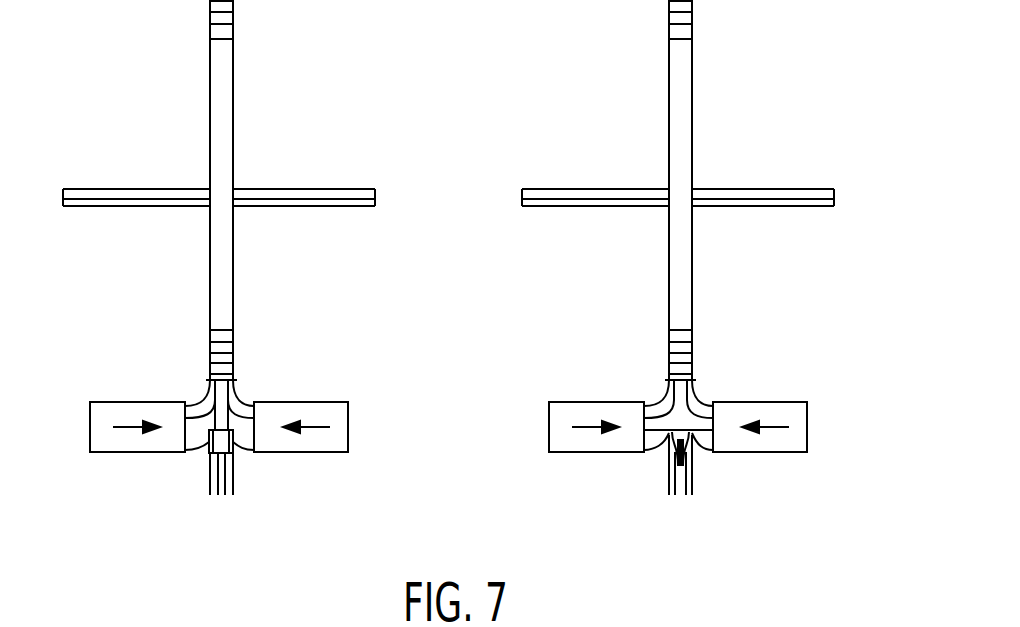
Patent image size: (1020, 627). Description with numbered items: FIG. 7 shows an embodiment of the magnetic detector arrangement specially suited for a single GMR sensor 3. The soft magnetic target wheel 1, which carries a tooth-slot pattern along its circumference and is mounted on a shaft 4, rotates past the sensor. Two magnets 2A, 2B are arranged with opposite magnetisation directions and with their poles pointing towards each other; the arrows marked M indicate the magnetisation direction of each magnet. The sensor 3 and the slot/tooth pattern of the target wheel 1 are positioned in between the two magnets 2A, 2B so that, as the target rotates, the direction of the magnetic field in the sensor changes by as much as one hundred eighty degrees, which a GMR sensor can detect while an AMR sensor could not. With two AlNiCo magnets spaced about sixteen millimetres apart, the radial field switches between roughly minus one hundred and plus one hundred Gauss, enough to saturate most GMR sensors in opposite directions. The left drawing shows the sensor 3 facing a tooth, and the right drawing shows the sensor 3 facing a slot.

The target wheel 1 is at (233, 77).
The first magnet 2A is at (107, 412).
The second magnet 2B is at (331, 412).
The sensor 3 is at (222, 445).
The shaft 4 is at (98, 189).
The magnetisation direction M is at (127, 432).